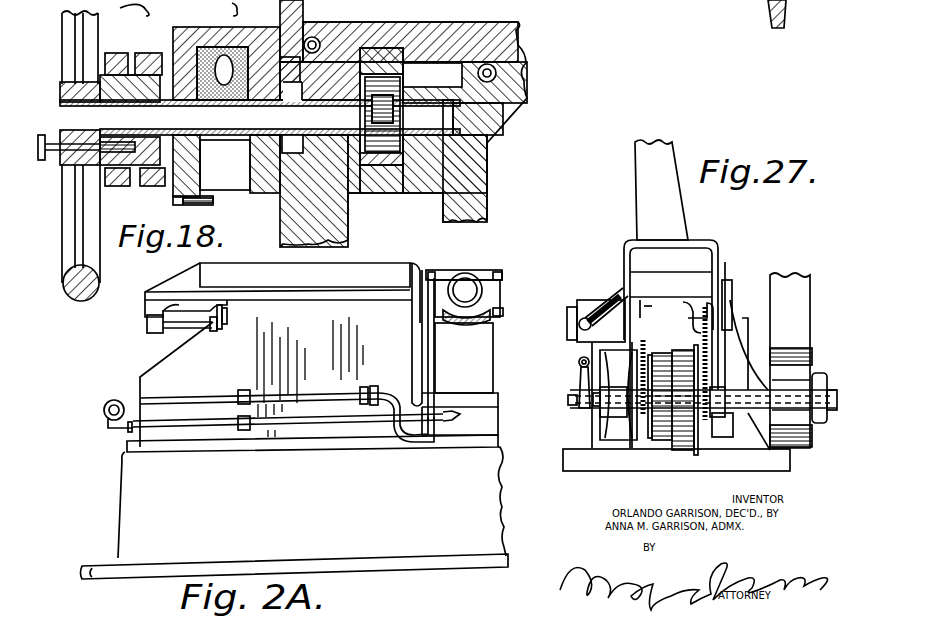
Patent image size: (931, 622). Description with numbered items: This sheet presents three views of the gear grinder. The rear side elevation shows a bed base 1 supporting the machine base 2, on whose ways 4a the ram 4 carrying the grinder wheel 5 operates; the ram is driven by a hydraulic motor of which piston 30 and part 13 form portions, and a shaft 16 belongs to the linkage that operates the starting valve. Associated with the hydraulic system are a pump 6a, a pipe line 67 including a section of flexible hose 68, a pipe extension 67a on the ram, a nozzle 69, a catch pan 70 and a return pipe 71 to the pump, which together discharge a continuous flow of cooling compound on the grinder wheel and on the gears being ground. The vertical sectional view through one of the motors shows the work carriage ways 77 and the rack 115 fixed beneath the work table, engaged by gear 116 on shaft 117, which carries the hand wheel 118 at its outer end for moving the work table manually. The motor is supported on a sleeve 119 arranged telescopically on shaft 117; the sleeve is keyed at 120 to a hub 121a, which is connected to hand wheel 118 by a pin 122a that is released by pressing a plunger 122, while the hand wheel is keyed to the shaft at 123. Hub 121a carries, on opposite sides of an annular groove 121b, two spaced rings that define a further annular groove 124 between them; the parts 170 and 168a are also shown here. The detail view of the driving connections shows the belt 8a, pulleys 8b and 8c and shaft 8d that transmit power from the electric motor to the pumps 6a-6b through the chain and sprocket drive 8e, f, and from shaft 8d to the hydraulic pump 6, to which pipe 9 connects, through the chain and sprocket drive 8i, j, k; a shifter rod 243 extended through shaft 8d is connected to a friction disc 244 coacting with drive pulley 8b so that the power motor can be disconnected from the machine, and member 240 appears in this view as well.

In FIG. 18, the hand wheel 118 is at (90, 301).
In FIG. 18, the key 123 is at (70, 102).
In FIG. 18, the key 120 is at (140, 106).
In FIG. 18, the sleeve 119 is at (193, 105).
In FIG. 18, the shaft 117 is at (280, 117).
In FIG. 18, the hub 121a is at (178, 150).
In FIG. 18, the plunger 122 is at (42, 160).
In FIG. 18, the pin 122a is at (88, 165).
In FIG. 18, the annular groove 121b is at (144, 186).
In FIG. 18, the annular groove 124 is at (173, 202).
In FIG. 18, the shaft 16 is at (324, 30).
In FIG. 18, the ways 77 is at (360, 10).
In FIG. 18, the rack 115 is at (404, 6).
In FIG. 18, the gear 116 is at (386, 148).
In FIG. 18, the bed base 1 is at (348, 214).
In FIG. 2A, the bed base 1 is at (295, 507).
In FIG. 18, the lever 170 is at (149, 8).
In FIG. 18, the pin 168a is at (254, 13).
In FIG. 2A, the ram 4 is at (282, 293).
In FIG. 2A, the ways 4a is at (337, 294).
In FIG. 2A, the hydraulic motor 13 is at (216, 318).
In FIG. 2A, the piston 30 is at (190, 332).
In FIG. 2A, the machine base 2 is at (251, 382).
In FIG. 2A, the pipe line 67 is at (218, 398).
In FIG. 2A, the return pipe 71 is at (340, 424).
In FIG. 2A, the pump 6a is at (110, 422).
In FIG. 2A, the flexible hose 68 is at (436, 370).
In FIG. 2A, the pipe extension 67a is at (456, 271).
In FIG. 2A, the nozzle 69 is at (490, 318).
In FIG. 2A, the grinder wheel 5 is at (501, 314).
In FIG. 2A, the catch pan 70 is at (478, 402).
In FIG. 27, the arm 240 is at (648, 200).
In FIG. 27, the pumps 6a-6b is at (724, 304).
In FIG. 27, the belt 8a is at (786, 280).
In FIG. 27, the pulley 8b is at (798, 346).
In FIG. 27, the pipe 9 is at (596, 321).
In FIG. 27, the hydraulic pump 6 is at (597, 298).
In FIG. 27, the shifter rod 243 is at (576, 412).
In FIG. 27, the chain and sprocket drive 8i is at (642, 425).
In FIG. 27, the pulley 8c is at (683, 350).
In FIG. 27, the chain and sprocket drive 8e is at (701, 442).
In FIG. 27, the shaft 8d is at (765, 365).
In FIG. 27, the chain and sprocket drive f is at (692, 317).
In FIG. 27, the chain and sprocket drive j is at (677, 363).
In FIG. 27, the chain and sprocket drive k is at (650, 309).
In FIG. 27, the friction disc 244 is at (824, 421).